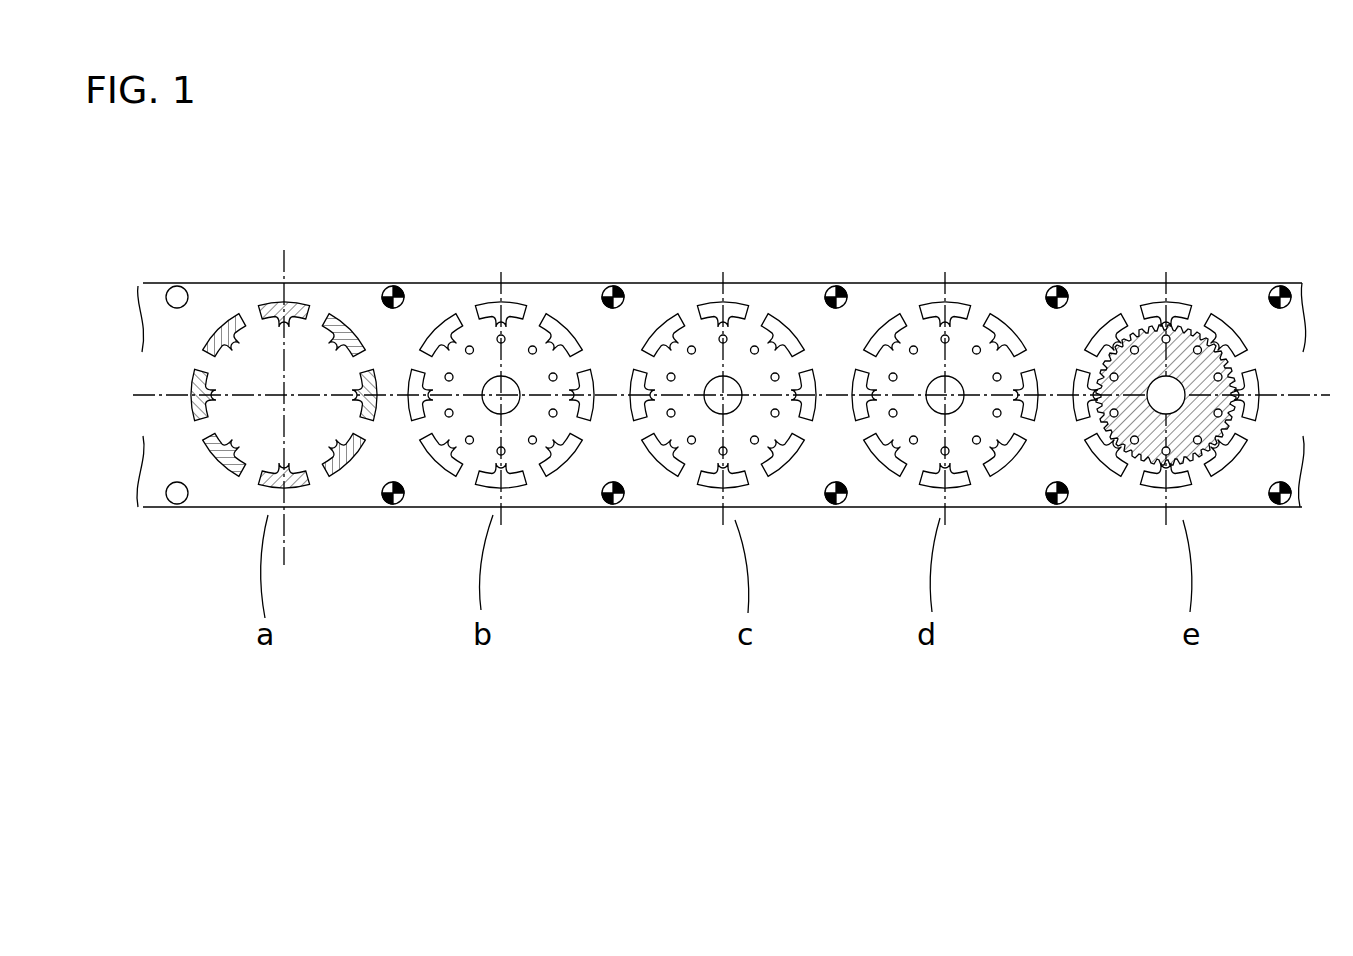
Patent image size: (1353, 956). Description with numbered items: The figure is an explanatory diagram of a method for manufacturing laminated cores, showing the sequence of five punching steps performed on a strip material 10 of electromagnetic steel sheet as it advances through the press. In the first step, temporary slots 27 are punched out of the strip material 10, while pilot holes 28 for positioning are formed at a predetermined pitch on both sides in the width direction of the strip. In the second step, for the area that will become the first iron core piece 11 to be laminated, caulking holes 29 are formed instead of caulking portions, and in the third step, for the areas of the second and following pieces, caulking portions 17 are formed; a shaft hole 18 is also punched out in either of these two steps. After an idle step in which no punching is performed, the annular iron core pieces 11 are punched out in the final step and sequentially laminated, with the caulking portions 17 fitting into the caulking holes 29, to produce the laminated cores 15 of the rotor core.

The strip material 10 is at (241, 292).
The iron core piece 11 is at (1208, 325).
The laminated core 15 is at (1197, 322).
The caulking portion 17 is at (756, 347).
The shaft hole 18 is at (513, 402).
The temporary slot 27 is at (298, 310).
The pilot hole 28 is at (176, 286).
The caulking hole 29 is at (534, 347).